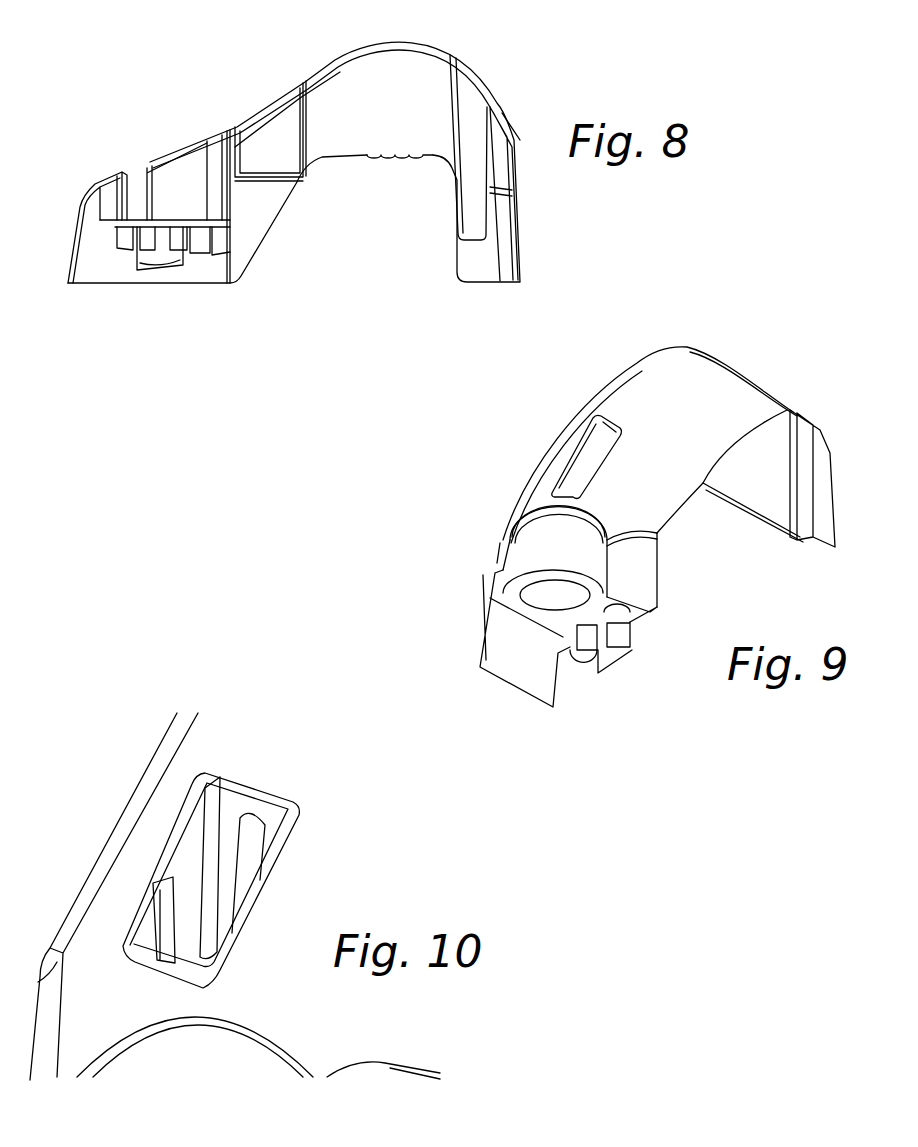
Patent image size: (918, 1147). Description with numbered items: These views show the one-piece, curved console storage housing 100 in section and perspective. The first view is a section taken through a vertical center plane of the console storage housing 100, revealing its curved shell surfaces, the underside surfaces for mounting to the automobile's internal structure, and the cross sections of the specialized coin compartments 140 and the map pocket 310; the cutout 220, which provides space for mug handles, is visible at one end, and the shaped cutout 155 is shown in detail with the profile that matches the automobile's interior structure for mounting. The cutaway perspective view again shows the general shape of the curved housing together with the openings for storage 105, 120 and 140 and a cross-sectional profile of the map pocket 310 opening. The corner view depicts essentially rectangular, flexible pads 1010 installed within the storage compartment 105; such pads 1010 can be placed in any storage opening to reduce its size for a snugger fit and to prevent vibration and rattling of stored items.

In FIG. 8, the console storage housing 100 is at (243, 340).
In FIG. 9, the console storage housing 100 is at (418, 576).
In FIG. 9, the storage compartment 105 is at (610, 440).
In FIG. 10, the storage compartment 105 is at (230, 880).
In FIG. 9, the opening for storage 120 is at (550, 533).
In FIG. 9, the specialized coin compartment 140 is at (650, 648).
In FIG. 8, the shaped cutout 155 is at (397, 178).
In FIG. 8, the cutout 220 is at (135, 182).
In FIG. 8, the map pocket 310 is at (472, 130).
In FIG. 9, the map pocket 310 is at (807, 453).
In FIG. 10, the flexible pad 1010 is at (163, 888).